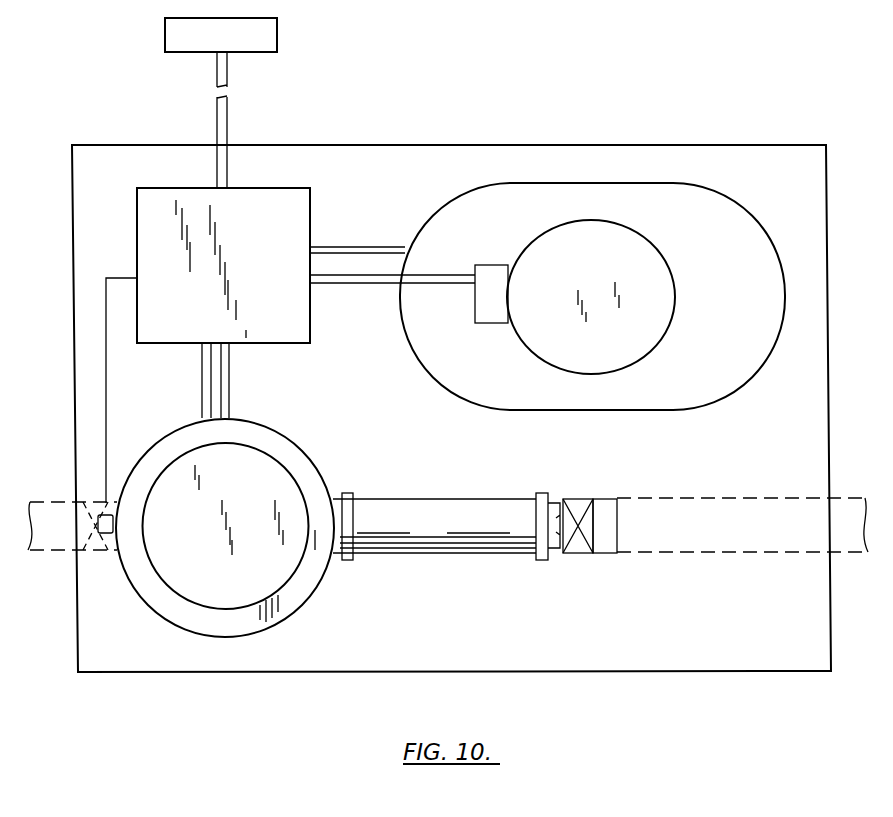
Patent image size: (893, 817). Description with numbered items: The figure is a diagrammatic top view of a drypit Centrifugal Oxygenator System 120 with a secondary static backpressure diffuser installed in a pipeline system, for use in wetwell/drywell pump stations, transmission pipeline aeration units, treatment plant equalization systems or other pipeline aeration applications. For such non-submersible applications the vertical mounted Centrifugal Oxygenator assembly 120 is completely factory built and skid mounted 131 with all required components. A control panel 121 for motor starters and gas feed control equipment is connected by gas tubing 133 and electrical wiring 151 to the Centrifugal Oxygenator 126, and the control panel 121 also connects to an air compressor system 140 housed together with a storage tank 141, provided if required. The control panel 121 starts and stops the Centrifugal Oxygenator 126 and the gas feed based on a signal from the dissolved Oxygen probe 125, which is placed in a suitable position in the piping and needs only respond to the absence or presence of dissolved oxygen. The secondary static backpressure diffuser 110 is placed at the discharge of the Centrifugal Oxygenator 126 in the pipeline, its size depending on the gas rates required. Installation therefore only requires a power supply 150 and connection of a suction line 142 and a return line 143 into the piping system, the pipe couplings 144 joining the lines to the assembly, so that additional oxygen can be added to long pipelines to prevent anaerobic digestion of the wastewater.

The secondary static backpressure diffuser 110 is at (487, 478).
The Centrifugal Oxygenator System 120 is at (462, 127).
The control panel 121 is at (298, 202).
The dissolved Oxygen probe 125 is at (105, 515).
The Centrifugal Oxygenator 126 is at (302, 592).
The skid mounting 131 is at (733, 145).
The gas tubing 133 is at (372, 247).
The air compressor system 140 is at (668, 268).
The storage tank 141 is at (730, 198).
The suction line 142 is at (42, 552).
The return line 143 is at (745, 498).
The coupling 144 is at (578, 510).
The power supply 150 is at (277, 37).
The electrical wiring 151 is at (330, 280).